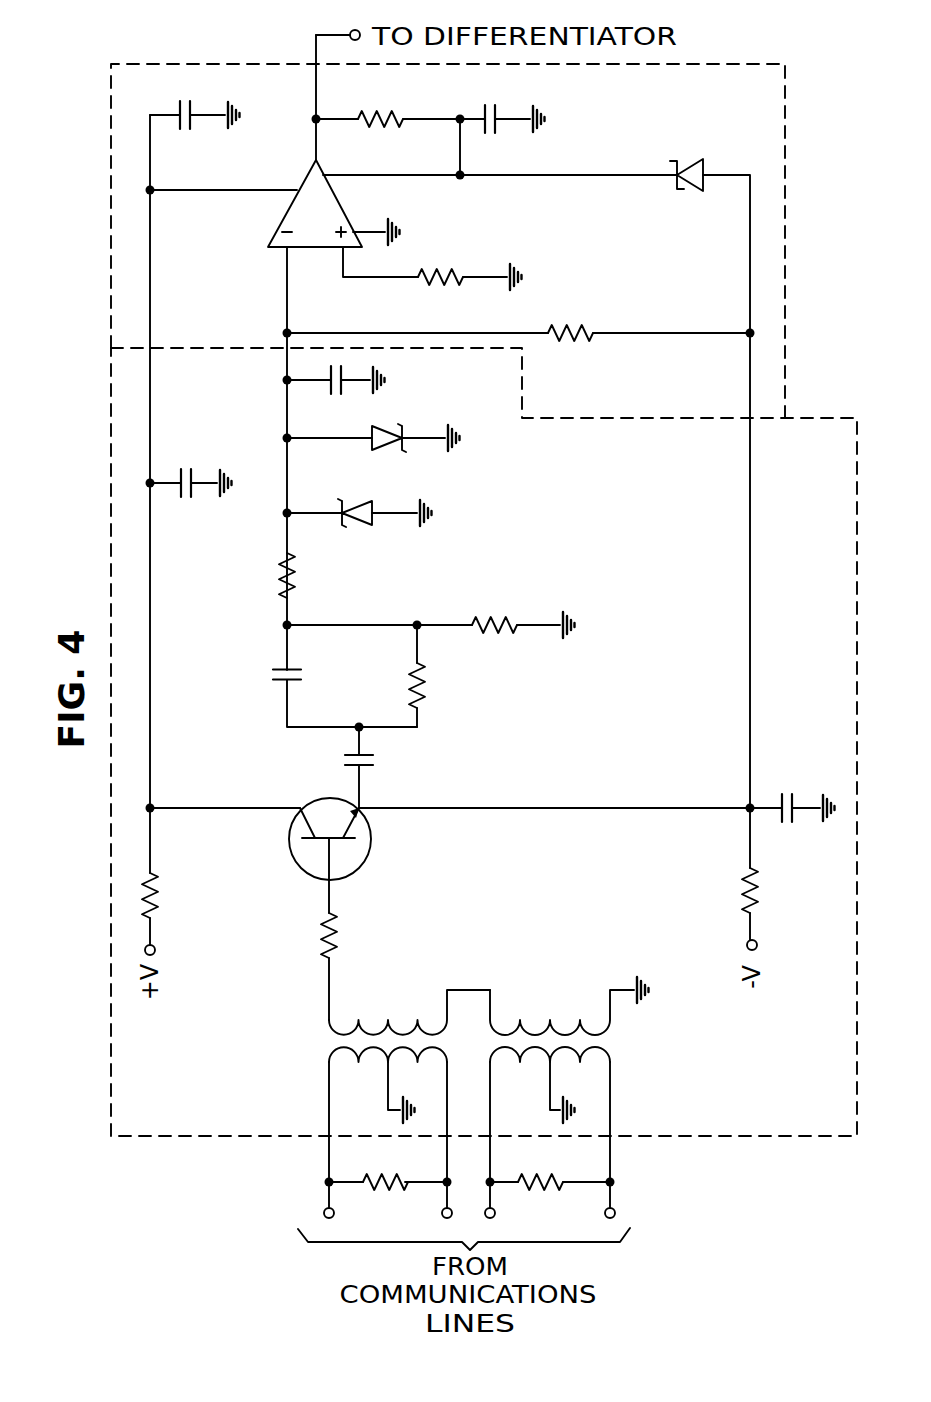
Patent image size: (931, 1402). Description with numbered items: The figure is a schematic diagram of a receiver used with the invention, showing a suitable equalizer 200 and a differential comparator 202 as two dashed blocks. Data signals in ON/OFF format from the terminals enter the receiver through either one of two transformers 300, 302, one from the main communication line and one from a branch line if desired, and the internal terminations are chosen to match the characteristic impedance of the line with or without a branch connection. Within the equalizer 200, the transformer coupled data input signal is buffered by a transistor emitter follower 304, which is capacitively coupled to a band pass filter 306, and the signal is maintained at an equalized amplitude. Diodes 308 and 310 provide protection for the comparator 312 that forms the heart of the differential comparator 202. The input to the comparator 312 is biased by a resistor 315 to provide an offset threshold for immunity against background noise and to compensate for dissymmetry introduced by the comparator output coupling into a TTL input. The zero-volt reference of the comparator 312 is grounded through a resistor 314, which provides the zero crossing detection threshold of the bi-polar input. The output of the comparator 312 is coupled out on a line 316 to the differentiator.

The equalizer 200 is at (111, 937).
The differential comparator 202 is at (111, 313).
The transformer 300 is at (383, 1020).
The transformer 302 is at (547, 1020).
The transistor emitter follower 304 is at (290, 860).
The band pass filter 306 is at (300, 700).
The diode 308 is at (364, 522).
The diode 310 is at (383, 430).
The comparator 312 is at (273, 230).
The resistor 314 is at (440, 268).
The resistor 315 is at (584, 327).
The line 316 is at (313, 90).